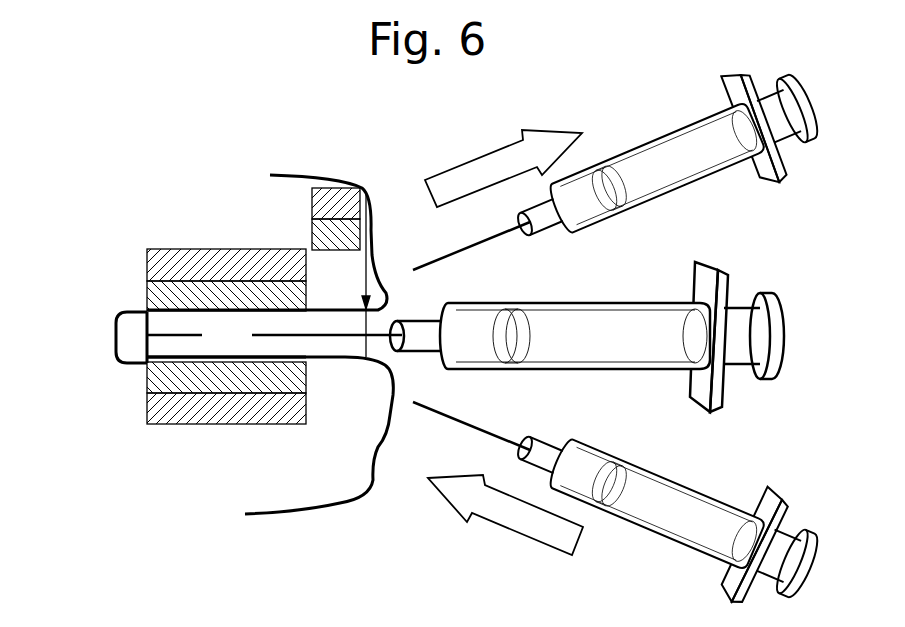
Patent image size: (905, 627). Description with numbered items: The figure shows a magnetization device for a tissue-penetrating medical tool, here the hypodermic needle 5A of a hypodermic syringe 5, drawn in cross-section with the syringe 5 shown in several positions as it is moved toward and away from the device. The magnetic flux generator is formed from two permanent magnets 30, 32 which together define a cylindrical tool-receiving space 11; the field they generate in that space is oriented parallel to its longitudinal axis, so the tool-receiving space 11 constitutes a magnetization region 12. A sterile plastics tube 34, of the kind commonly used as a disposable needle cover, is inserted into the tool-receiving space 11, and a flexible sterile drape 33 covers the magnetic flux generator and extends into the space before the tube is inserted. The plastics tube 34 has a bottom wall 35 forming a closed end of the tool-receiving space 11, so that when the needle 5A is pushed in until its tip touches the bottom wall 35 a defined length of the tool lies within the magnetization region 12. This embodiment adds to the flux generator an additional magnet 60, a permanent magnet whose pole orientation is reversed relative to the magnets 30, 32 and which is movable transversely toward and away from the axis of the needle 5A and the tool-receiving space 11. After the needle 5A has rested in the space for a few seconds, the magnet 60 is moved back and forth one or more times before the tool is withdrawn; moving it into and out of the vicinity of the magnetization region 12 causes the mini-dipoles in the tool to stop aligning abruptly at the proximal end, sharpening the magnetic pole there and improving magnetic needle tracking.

The hypodermic syringe 5 is at (600, 303).
The hypodermic needle 5A is at (450, 252).
The tool-receiving space 11 is at (156, 351).
The magnetization region 12 is at (270, 362).
The permanent magnet 30 is at (147, 412).
The permanent magnet 32 is at (146, 260).
The flexible sterile drape 33 is at (292, 513).
The sterile plastics tube 34 is at (195, 350).
The bottom wall 35 is at (140, 313).
The additional magnet 60 is at (310, 197).